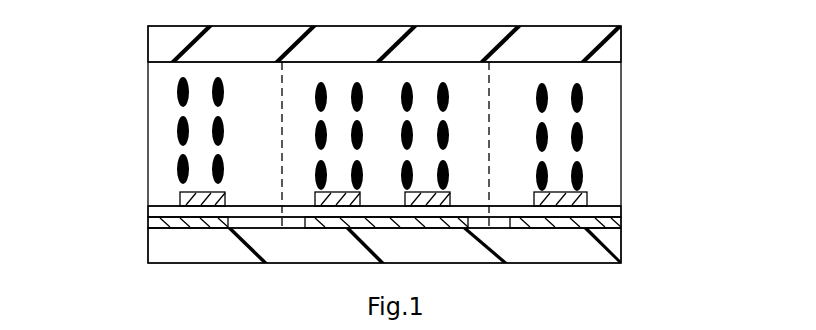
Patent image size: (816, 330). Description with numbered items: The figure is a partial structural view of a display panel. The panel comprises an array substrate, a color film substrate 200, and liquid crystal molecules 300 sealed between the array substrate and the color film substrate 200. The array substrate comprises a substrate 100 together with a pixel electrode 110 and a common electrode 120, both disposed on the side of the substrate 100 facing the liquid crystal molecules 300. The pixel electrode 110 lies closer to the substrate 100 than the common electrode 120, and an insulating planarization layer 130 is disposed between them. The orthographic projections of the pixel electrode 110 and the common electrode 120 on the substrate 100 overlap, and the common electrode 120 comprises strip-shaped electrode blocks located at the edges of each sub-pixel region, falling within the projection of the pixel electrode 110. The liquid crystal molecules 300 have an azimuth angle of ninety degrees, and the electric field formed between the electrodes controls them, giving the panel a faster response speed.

The substrate 100 is at (621, 245).
The pixel electrode 110 is at (621, 217).
The common electrode 120 is at (587, 198).
The insulating planarization layer 130 is at (148, 210).
The color film substrate 200 is at (148, 31).
The liquid crystal molecules 300 is at (583, 131).